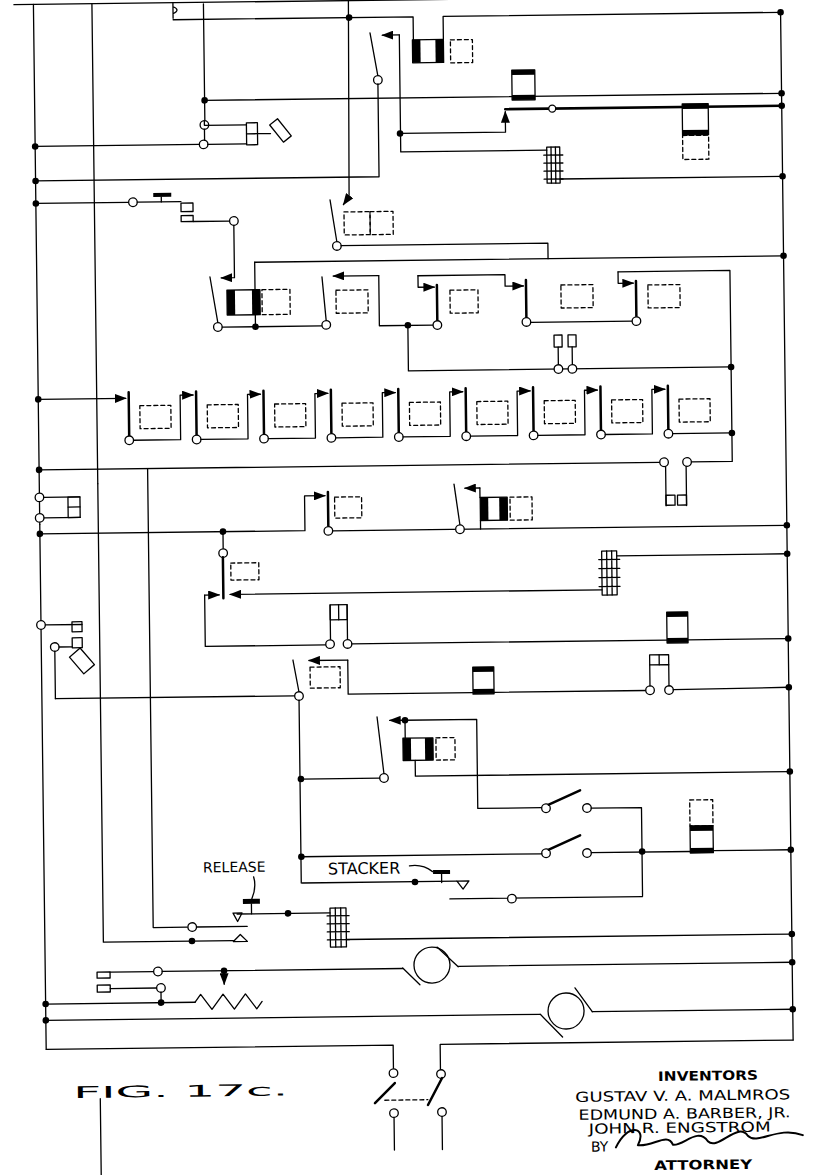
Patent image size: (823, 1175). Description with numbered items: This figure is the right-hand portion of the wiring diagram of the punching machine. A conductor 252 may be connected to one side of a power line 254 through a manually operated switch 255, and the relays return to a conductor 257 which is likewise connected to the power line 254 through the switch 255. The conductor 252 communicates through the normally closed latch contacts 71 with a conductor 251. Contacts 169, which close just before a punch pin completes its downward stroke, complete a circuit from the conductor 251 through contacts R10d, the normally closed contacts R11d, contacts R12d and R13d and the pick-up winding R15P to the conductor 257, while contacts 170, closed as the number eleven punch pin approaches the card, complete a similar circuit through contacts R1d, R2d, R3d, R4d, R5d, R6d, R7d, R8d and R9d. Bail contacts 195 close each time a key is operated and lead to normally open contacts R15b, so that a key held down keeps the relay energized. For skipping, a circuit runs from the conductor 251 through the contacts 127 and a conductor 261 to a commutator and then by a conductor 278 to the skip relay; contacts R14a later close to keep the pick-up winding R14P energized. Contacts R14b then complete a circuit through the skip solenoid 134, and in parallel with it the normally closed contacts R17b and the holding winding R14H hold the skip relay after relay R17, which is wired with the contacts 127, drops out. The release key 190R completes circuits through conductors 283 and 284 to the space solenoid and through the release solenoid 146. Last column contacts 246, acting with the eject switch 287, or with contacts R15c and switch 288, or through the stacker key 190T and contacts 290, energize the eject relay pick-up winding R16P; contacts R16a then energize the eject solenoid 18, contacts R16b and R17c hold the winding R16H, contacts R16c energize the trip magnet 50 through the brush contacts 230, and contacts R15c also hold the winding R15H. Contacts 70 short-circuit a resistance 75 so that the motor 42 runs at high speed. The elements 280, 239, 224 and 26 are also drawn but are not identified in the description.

The conductor 251 is at (40, 42).
The conductor 252 is at (40, 818).
The conductor 280 is at (179, 12).
The conductor 284 is at (98, 818).
The conductor 283 is at (148, 585).
The conductor 257 is at (786, 42).
The conductor 278 is at (352, 17).
The conductor 261 is at (210, 58).
The contacts of relay R14 R14b is at (372, 33).
The normally closed contacts of relay R17 R17b is at (504, 111).
The pick-up winding of relay R14 R14P is at (434, 63).
The relay R17 is at (541, 80).
The holding winding of relay R14 R14H is at (714, 124).
The skip solenoid 134 is at (550, 165).
The contacts 127 is at (241, 143).
The bail contacts 195 is at (176, 192).
The contacts of relay R14 R14a is at (334, 198).
The pick-up winding of relay R15 R15P is at (243, 290).
The normally open contacts of relay R15 R15b is at (212, 272).
The contacts of relay R13 R13d is at (329, 300).
The contacts of relay R12 R12d is at (442, 304).
The contacts of relay R11 R11d is at (534, 287).
The contacts of relay R10 R10d is at (639, 300).
The contacts 170 is at (578, 357).
The contacts of relay R1 R1d is at (129, 388).
The contacts of relay R2 R2d is at (196, 388).
The contacts of relay R3 R3d is at (264, 388).
The contacts of relay R4 R4d is at (331, 388).
The contacts of relay R5 R5d is at (407, 380).
The contacts of relay R6 R6d is at (474, 380).
The contacts of relay R7 R7d is at (541, 380).
The contacts of relay R8 R8d is at (609, 380).
The contacts of relay R9 R9d is at (676, 380).
The contacts 169 is at (687, 510).
The latch contacts 71 is at (62, 500).
The contacts of relay R17 R17c is at (320, 491).
The contacts of relay R16 R16b is at (468, 480).
The holding winding of relay R16 R16H is at (520, 521).
The normally open contacts of relay R16 R16a is at (226, 598).
The plug connector 239 is at (347, 622).
The solenoid coil 224 is at (688, 626).
The eject solenoid 18 is at (600, 562).
The contacts of relay R16 R16c is at (290, 660).
The trip magnet 50 is at (470, 676).
The brush contacts 230 is at (652, 657).
The last column contacts 246 is at (84, 635).
The contacts of relay R15 R15c is at (380, 718).
The holding winding of relay R15 R15H is at (416, 762).
The switch 288 is at (581, 800).
The eject switch 287 is at (581, 846).
The pick-up winding of relay R16 R16P is at (710, 844).
The stacker key 190T is at (447, 872).
The contacts 290 is at (452, 898).
The release solenoid 146 is at (345, 926).
The release key 190R is at (229, 913).
The contacts 70 is at (90, 972).
The resistance 75 is at (246, 994).
The motor 42 is at (408, 953).
The motor 26 is at (548, 999).
The manually operated switch 255 is at (372, 1093).
The power line 254 is at (433, 1128).